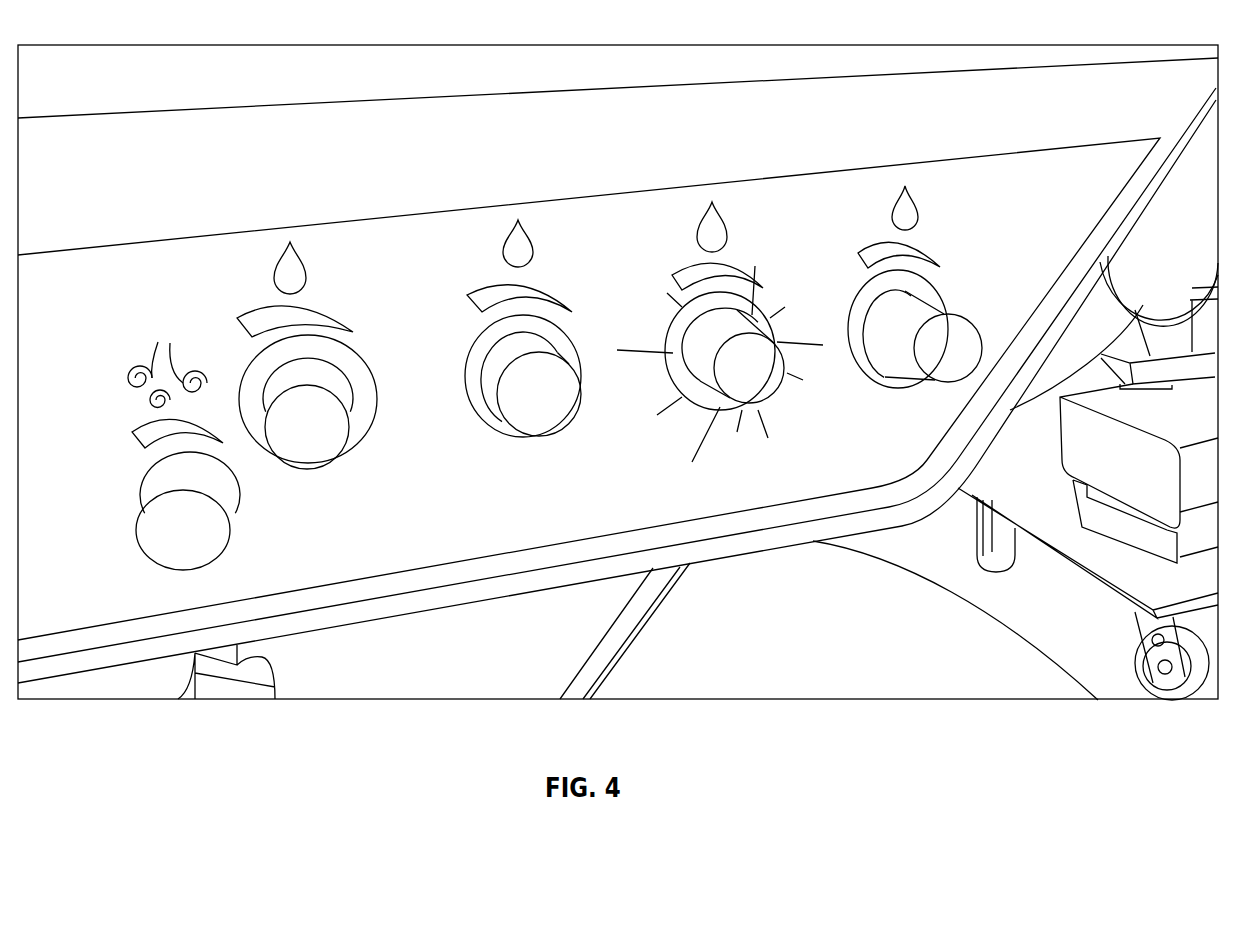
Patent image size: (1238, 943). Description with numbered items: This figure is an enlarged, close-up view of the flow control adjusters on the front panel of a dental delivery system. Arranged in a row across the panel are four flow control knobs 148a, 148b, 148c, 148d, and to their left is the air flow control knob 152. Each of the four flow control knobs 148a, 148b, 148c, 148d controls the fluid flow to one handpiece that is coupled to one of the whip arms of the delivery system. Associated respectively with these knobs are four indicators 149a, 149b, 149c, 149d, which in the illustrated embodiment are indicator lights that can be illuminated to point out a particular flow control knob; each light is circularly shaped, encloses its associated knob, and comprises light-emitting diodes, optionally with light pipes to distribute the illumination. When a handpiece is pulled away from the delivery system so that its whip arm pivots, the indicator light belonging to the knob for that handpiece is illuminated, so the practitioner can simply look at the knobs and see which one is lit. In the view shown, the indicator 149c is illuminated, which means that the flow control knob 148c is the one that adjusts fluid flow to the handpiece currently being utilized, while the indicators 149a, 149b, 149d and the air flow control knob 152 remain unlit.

The flow control knob 148a is at (310, 452).
The flow control knob 148b is at (550, 413).
The flow control knob 148c is at (758, 388).
The flow control knob 148d is at (940, 370).
The indicator 149a is at (307, 352).
The indicator 149b is at (527, 337).
The indicator 149c is at (720, 305).
The indicator 149d is at (915, 287).
The air flow control knob 152 is at (207, 532).